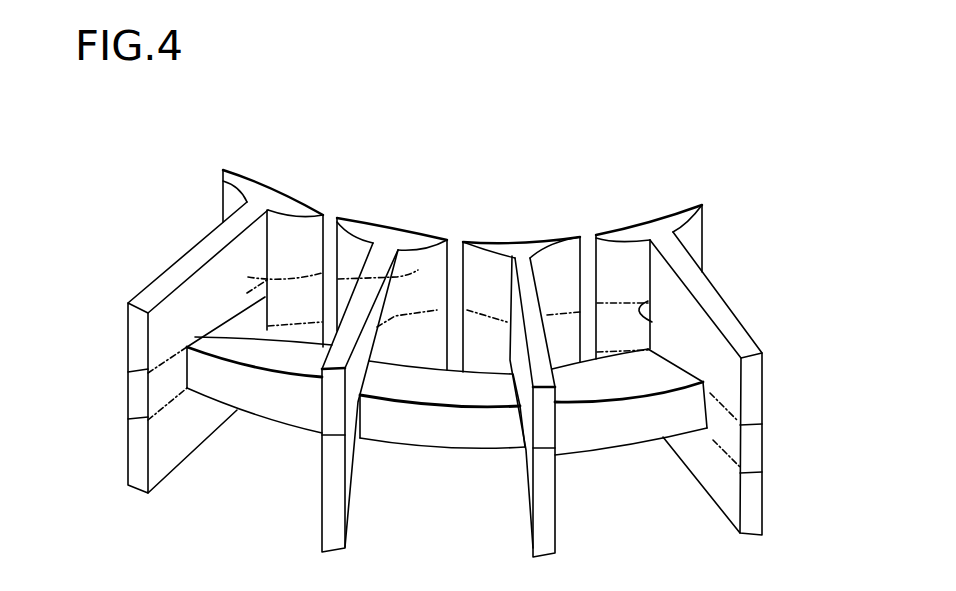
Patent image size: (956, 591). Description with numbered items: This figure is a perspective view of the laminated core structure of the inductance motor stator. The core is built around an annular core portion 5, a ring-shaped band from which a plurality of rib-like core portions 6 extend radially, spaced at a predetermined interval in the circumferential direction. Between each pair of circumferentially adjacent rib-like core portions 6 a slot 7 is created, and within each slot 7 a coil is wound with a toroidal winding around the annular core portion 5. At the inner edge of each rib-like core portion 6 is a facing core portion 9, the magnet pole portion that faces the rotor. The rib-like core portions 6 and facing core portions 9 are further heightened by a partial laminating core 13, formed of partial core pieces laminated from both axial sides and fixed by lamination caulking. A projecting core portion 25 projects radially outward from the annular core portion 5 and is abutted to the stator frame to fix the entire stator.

The annular core portion 5 is at (410, 427).
The rib-like core portion 6 is at (402, 337).
The slot 7 is at (252, 528).
The facing core portion 9 is at (427, 333).
The partial laminating core 13 is at (198, 253).
The projecting core portion 25 is at (755, 447).